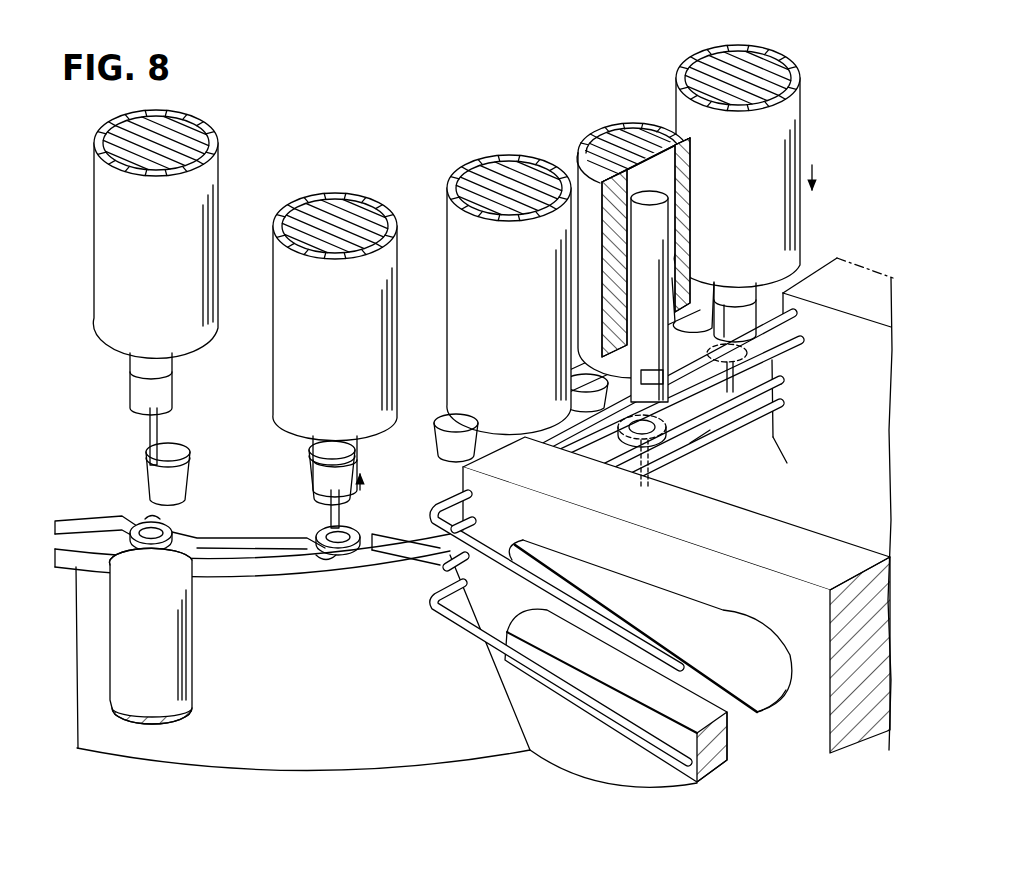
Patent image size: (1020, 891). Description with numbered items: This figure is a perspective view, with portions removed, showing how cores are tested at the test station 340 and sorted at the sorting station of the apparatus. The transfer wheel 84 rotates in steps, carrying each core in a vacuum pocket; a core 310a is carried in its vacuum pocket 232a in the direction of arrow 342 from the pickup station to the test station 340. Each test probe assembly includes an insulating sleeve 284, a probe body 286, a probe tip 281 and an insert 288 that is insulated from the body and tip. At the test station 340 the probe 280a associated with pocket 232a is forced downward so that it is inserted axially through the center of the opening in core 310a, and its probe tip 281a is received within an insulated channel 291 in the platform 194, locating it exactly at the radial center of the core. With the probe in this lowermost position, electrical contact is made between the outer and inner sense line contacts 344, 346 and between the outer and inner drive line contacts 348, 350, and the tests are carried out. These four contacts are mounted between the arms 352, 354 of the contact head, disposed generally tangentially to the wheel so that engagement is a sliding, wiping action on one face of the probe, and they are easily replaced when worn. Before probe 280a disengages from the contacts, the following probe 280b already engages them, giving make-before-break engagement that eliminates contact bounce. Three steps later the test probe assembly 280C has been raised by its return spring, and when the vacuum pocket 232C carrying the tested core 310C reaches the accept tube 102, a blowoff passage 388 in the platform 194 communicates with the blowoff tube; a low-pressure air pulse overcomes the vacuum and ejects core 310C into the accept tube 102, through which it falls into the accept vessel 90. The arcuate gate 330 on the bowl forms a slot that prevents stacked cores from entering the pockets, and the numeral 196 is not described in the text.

The transfer wheel 84 is at (409, 568).
The accept vessel 90 is at (88, 582).
The accept tube 102 is at (193, 675).
The platform 194 is at (374, 560).
The turret arm 196 is at (247, 550).
The vacuum pocket 232C is at (122, 545).
The vacuum pocket 232a is at (690, 443).
The test probe 280a is at (572, 155).
The test probe 280b is at (658, 235).
The test probe assembly 280C is at (224, 186).
The probe tip 281 is at (150, 432).
The probe tip 281a is at (672, 472).
The insulating sleeve 284 is at (775, 74).
The probe body 286 is at (655, 262).
The insert 288 is at (172, 385).
The insulated channel 291 is at (327, 568).
The magnetic core 310C is at (138, 524).
The core 310a is at (633, 442).
The arcuate gate 330 is at (165, 520).
The test station 340 is at (675, 447).
The arrow 342 is at (815, 165).
The outer sense line contact 344 is at (798, 311).
The inner sense line contact 346 is at (785, 408).
The outer drive line contact 348 is at (806, 340).
The inner drive line contact 350 is at (786, 381).
The arm 352 is at (492, 673).
The arm 354 is at (856, 268).
The blowoff passage 388 is at (172, 483).